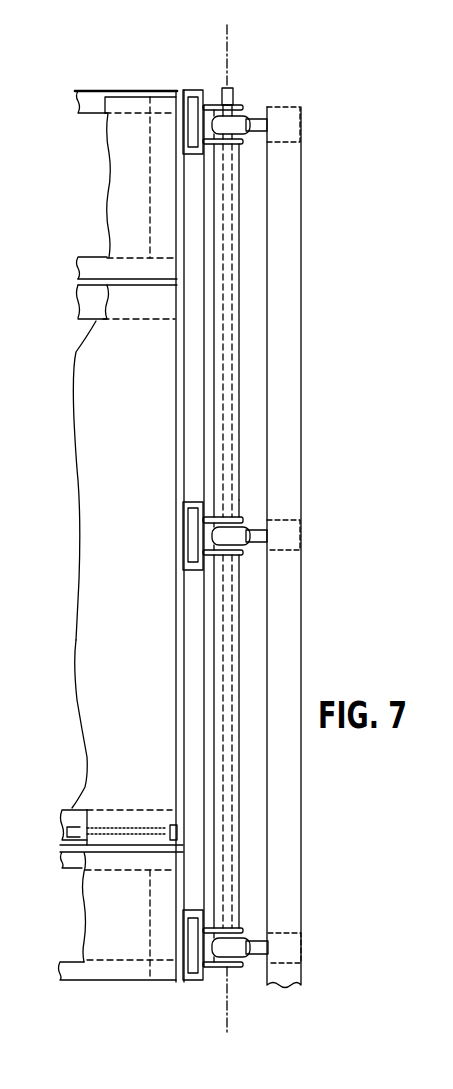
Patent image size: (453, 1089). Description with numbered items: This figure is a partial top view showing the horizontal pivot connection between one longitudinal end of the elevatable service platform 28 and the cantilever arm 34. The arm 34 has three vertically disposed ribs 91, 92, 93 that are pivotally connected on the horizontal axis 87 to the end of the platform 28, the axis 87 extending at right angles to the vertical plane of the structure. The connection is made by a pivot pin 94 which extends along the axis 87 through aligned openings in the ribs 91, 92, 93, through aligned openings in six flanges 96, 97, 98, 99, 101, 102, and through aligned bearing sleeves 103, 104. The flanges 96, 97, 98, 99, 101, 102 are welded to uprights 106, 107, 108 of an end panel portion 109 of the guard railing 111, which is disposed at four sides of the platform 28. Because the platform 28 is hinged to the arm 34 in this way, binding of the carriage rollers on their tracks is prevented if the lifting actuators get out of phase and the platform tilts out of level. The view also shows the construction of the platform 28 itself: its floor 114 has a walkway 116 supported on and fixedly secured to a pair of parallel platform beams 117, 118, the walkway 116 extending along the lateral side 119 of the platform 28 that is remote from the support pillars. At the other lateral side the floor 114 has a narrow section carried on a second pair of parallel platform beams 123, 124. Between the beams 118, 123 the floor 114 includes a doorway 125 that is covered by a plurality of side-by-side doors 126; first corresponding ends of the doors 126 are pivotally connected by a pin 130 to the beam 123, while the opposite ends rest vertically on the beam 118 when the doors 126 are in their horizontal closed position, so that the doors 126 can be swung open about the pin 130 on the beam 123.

The elevatable service platform 28 is at (110, 97).
The cantilever arm 34 is at (302, 365).
The horizontal axis 87 is at (223, 73).
The rib 91 is at (262, 130).
The rib 92 is at (257, 524).
The rib 93 is at (252, 957).
The pivot pin 94 is at (236, 90).
The flange 96 is at (245, 105).
The flange 97 is at (243, 135).
The flange 98 is at (240, 517).
The flange 99 is at (240, 554).
The flange 101 is at (250, 937).
The flange 102 is at (233, 970).
The bearing sleeve 103 is at (239, 262).
The bearing sleeve 104 is at (239, 622).
The upright 106 is at (186, 147).
The upright 107 is at (184, 540).
The upright 108 is at (184, 972).
The end panel portion 109 is at (205, 355).
The guard railing 111 is at (190, 400).
The floor 114 is at (80, 480).
The walkway 116 is at (122, 230).
The platform beam 117 is at (88, 91).
The platform beam 118 is at (78, 270).
The lateral side 119 is at (136, 91).
The platform beam 123 is at (80, 868).
The platform beam 124 is at (78, 964).
The doorway 125 is at (82, 800).
The door 126 is at (87, 695).
The pin 130 is at (66, 830).